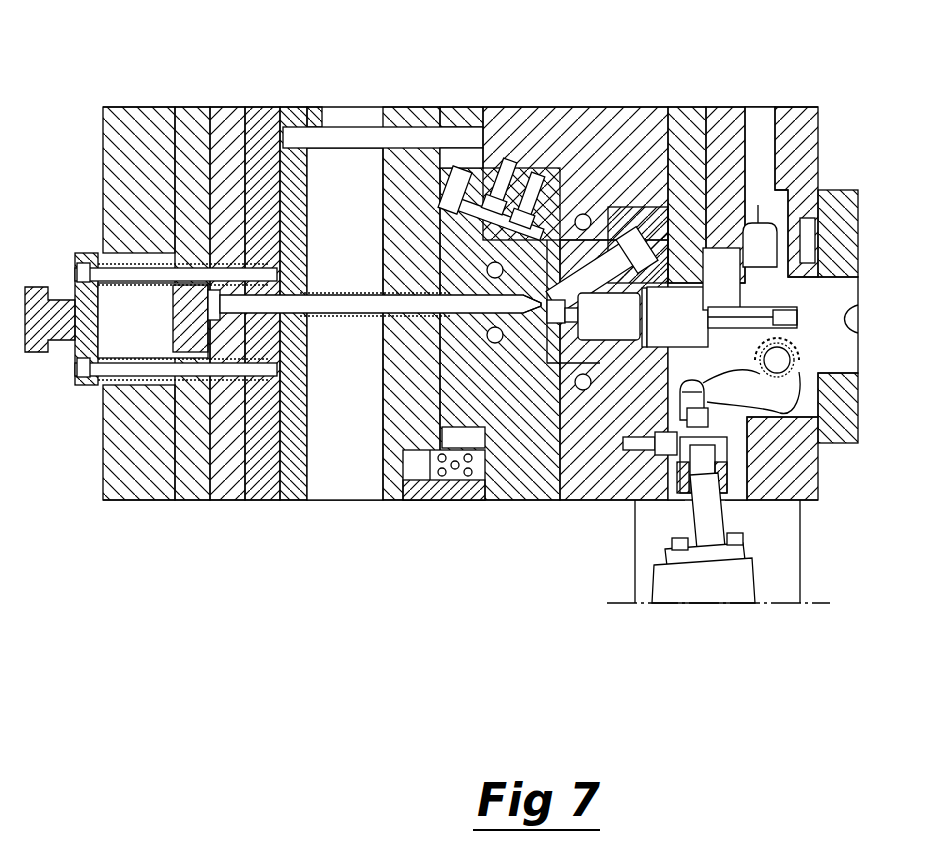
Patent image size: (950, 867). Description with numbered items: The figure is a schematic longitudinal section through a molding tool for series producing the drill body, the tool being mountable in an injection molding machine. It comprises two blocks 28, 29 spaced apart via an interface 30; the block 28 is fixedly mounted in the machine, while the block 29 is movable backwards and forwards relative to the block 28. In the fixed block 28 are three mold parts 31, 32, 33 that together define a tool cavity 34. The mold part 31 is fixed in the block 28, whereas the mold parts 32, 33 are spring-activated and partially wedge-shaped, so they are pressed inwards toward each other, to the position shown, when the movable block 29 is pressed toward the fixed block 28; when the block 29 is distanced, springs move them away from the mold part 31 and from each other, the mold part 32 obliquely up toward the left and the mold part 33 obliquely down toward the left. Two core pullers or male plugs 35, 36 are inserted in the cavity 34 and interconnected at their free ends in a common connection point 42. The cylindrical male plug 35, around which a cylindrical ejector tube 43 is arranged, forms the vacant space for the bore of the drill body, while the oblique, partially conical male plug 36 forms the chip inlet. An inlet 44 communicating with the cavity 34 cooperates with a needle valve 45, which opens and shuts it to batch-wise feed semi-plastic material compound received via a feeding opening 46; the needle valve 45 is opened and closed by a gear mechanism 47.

The block 28 is at (682, 98).
The block 29 is at (262, 103).
The interface 30 is at (452, 242).
The mold part 31 is at (595, 237).
The mold part 32 is at (402, 230).
The mold part 33 is at (450, 395).
The tool cavity 34 is at (540, 303).
The male plug 35 is at (338, 316).
The male plug 36 is at (540, 295).
The connection point 42 is at (493, 210).
The ejector tube 43 is at (338, 294).
The inlet 44 is at (562, 330).
The needle valve 45 is at (740, 307).
The feeding opening 46 is at (862, 313).
The gear mechanism 47 is at (782, 403).